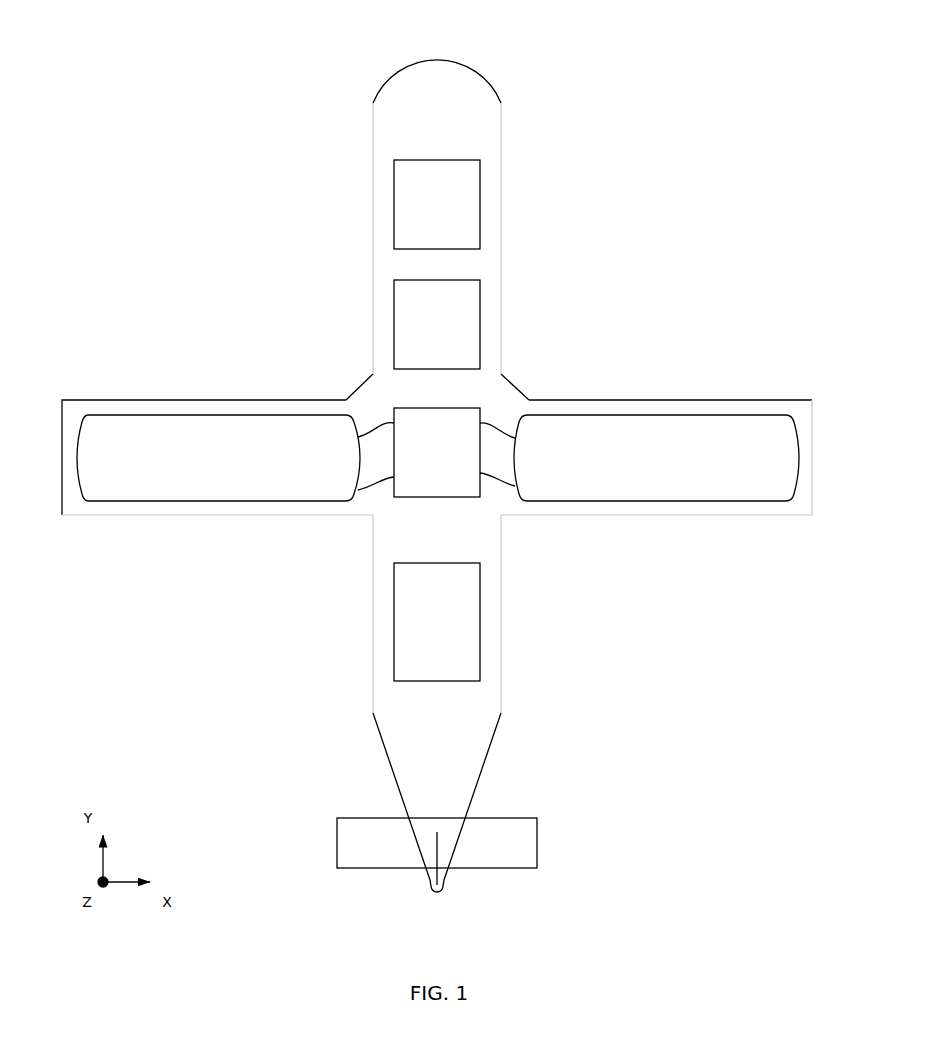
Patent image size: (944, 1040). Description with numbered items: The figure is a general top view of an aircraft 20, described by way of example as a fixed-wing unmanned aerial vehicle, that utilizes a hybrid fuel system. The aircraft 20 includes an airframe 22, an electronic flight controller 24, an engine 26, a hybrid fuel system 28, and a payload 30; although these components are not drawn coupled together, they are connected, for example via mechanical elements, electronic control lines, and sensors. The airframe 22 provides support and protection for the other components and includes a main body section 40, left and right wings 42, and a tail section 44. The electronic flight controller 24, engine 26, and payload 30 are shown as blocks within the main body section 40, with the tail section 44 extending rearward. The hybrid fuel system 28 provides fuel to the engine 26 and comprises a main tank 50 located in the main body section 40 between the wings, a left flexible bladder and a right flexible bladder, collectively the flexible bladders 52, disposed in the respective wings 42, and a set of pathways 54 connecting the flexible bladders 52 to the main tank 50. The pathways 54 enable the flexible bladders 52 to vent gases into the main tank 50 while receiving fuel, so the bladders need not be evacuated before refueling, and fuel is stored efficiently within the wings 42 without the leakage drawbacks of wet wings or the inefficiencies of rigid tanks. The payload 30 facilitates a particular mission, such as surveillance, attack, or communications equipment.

The aircraft 20 is at (622, 49).
The airframe 22 is at (523, 174).
The electronic flight controller 24 is at (437, 204).
The engine 26 is at (437, 324).
The hybrid fuel system 28 is at (438, 402).
The payload 30 is at (437, 622).
The main body section 40 is at (502, 287).
The wings 42 is at (615, 350).
The tail section 44 is at (480, 777).
The main tank 50 is at (437, 452).
The flexible bladders 52 is at (665, 372).
The set of pathways 54 is at (499, 410).